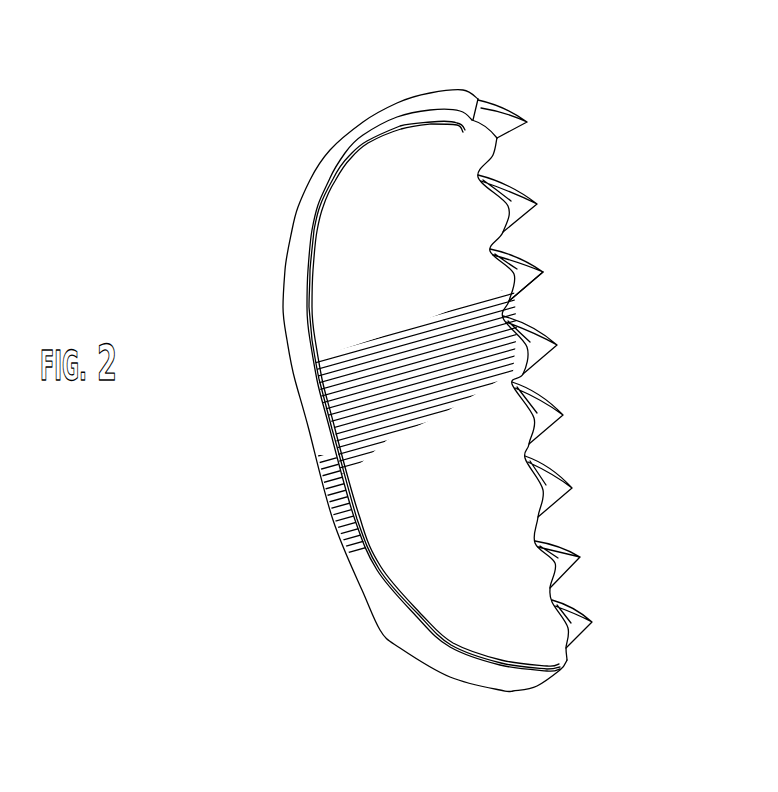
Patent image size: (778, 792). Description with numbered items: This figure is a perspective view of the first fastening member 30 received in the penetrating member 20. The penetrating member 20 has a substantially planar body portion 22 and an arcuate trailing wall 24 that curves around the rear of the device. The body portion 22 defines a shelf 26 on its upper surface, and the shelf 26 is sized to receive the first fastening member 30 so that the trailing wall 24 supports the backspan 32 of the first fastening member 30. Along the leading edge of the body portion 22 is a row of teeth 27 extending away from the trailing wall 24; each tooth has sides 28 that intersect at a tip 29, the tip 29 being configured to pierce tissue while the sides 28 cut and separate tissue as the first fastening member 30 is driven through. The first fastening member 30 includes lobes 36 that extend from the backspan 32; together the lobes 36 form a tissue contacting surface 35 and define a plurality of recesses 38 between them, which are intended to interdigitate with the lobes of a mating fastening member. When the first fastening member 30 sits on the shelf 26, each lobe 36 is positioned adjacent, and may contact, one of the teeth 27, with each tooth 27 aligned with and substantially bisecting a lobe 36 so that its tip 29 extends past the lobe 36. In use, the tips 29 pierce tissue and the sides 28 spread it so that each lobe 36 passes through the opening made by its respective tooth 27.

The penetrating member 20 is at (275, 413).
The body portion 22 is at (480, 86).
The arcuate trailing wall 24 is at (297, 270).
The shelf 26 is at (483, 102).
The teeth 27 is at (531, 184).
The sides 28 is at (513, 221).
The tip 29 is at (520, 293).
The first fastening member 30 is at (387, 135).
The backspan 32 is at (314, 346).
The tissue contacting surface 35 is at (550, 397).
The lobes 36 is at (523, 433).
The recesses 38 is at (523, 467).